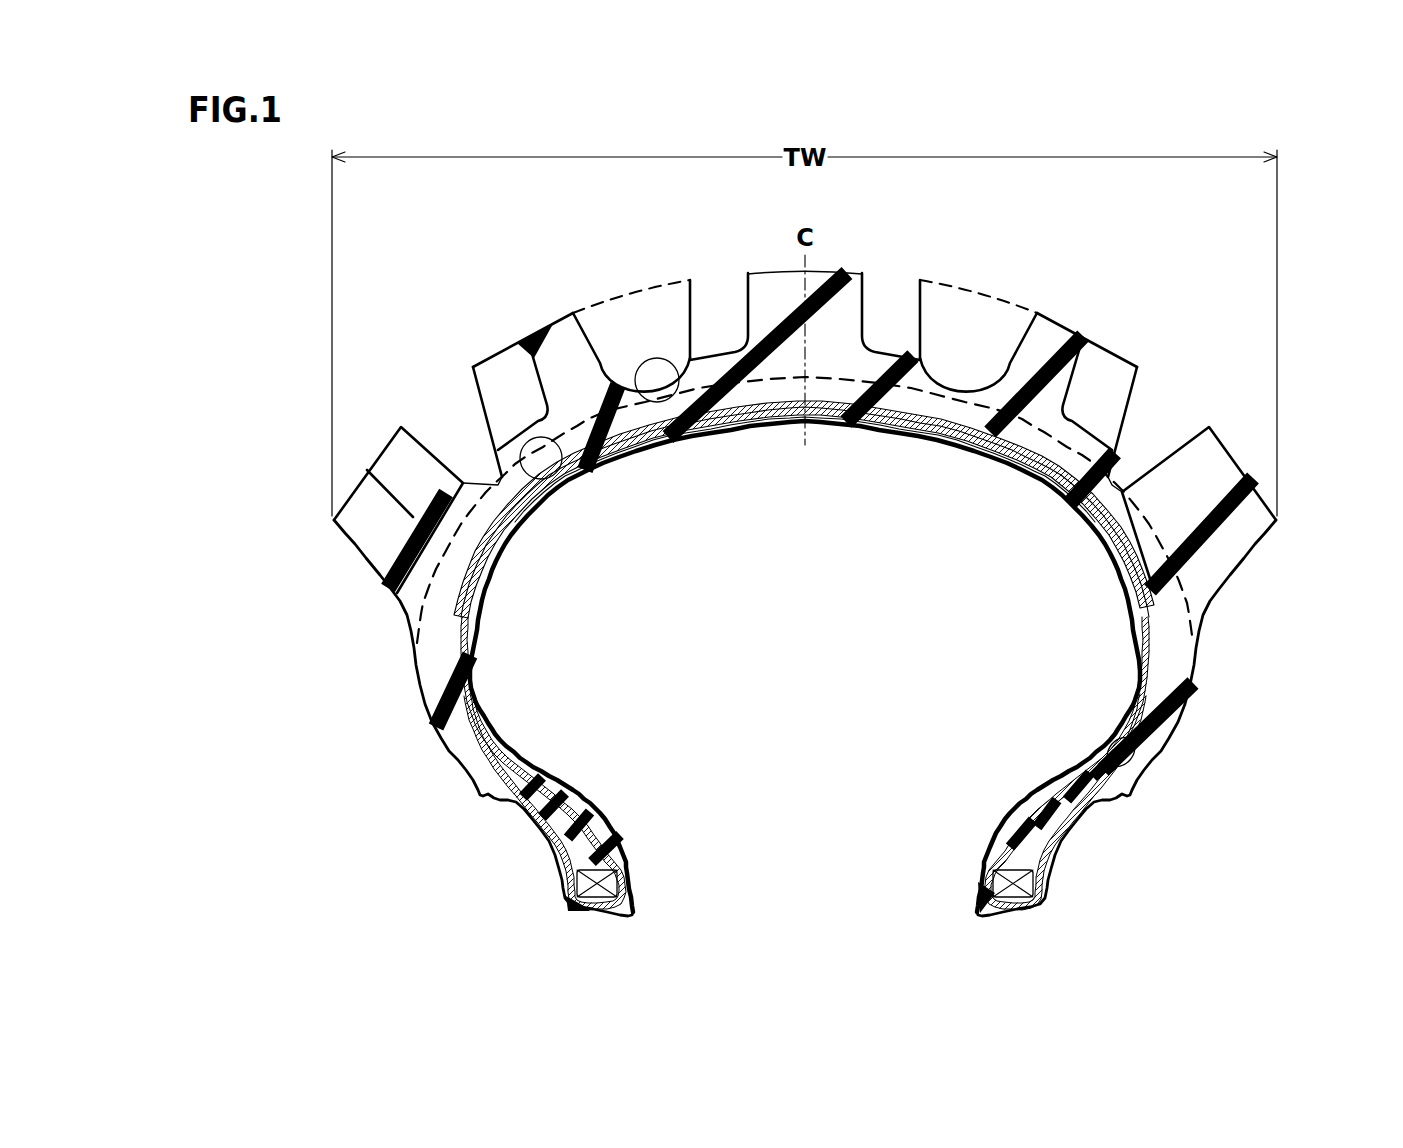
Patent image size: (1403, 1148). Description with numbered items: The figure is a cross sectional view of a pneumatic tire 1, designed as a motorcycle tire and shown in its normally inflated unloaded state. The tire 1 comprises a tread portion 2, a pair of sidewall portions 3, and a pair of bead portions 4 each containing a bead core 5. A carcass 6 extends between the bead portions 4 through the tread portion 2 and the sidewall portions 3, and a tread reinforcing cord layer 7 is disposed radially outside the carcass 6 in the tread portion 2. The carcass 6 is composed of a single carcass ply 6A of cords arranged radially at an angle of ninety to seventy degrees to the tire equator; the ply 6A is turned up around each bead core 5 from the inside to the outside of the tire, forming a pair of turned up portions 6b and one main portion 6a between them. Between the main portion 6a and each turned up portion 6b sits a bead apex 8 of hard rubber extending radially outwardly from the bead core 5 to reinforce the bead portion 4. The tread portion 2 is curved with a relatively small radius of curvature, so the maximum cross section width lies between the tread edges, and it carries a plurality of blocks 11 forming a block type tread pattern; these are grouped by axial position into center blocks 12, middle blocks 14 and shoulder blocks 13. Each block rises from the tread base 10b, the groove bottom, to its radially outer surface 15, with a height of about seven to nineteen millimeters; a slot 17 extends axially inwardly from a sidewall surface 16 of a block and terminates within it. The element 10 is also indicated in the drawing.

The pneumatic tire 1 is at (1303, 343).
The tread portion 2 is at (1125, 293).
The sidewall portions 3 is at (396, 694).
The bead portions 4 is at (802, 885).
The bead core 5 is at (580, 882).
The carcass 6 is at (1004, 622).
The carcass ply 6A is at (805, 469).
The main portion 6a is at (1130, 690).
The turned up portions 6b is at (1110, 758).
The tread reinforcing cord layer 7 is at (905, 418).
The bead apex 8 is at (587, 830).
The tread reinforcing layer 10 is at (667, 398).
The tread base 10b is at (530, 458).
The blocks 11 is at (362, 278).
The center blocks 12 is at (705, 273).
The shoulder blocks 13 is at (378, 426).
The middle blocks 14 is at (520, 324).
The radially outer surface 15 is at (357, 487).
The sidewall surface 16 is at (486, 420).
The slot 17 is at (405, 455).